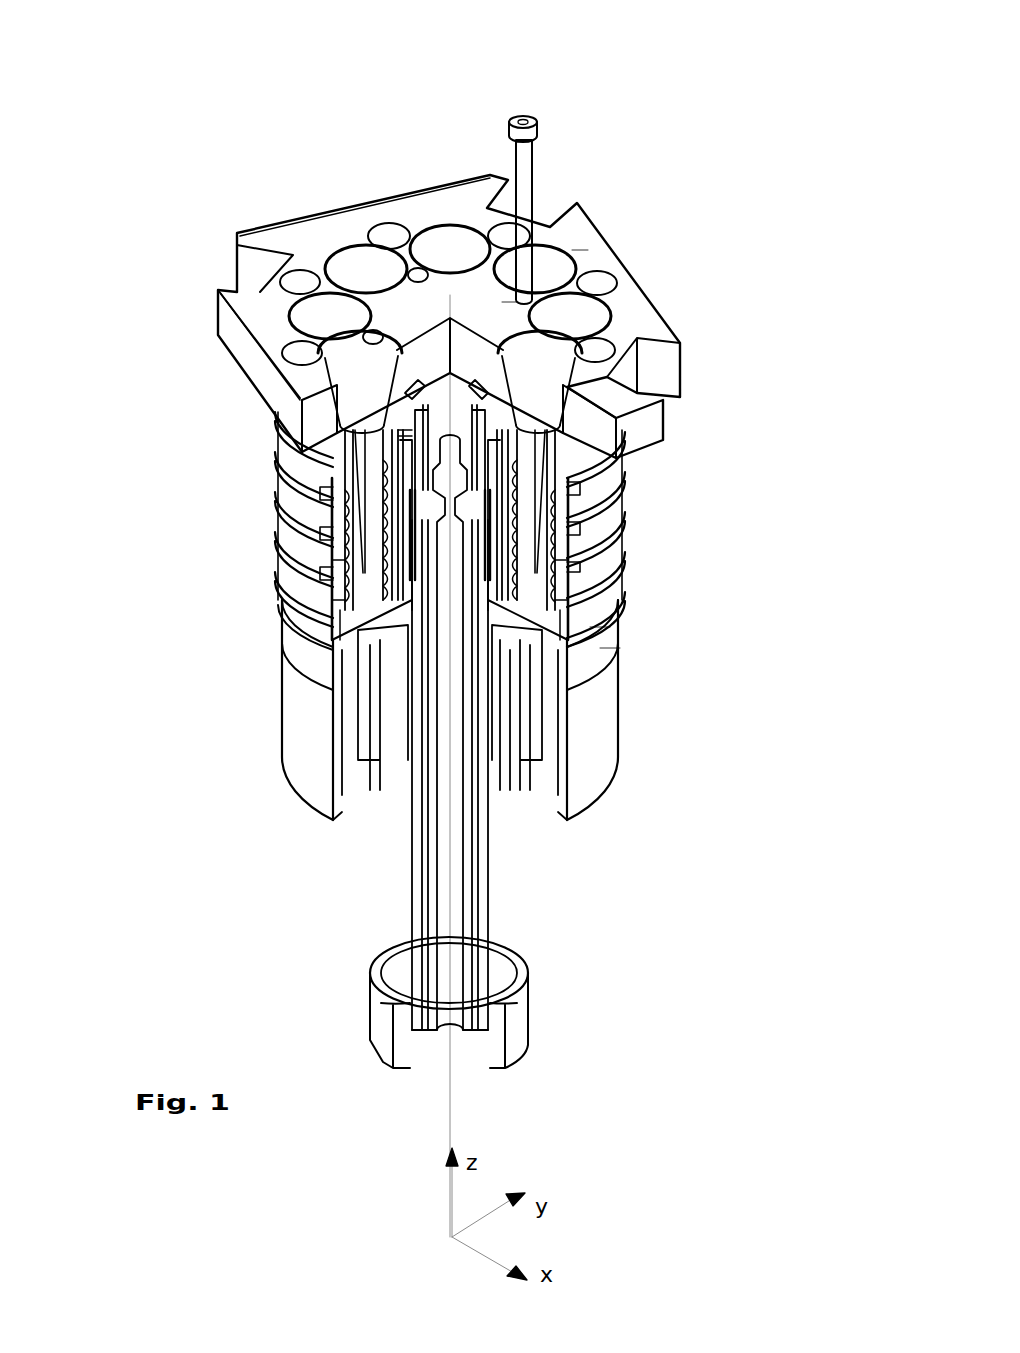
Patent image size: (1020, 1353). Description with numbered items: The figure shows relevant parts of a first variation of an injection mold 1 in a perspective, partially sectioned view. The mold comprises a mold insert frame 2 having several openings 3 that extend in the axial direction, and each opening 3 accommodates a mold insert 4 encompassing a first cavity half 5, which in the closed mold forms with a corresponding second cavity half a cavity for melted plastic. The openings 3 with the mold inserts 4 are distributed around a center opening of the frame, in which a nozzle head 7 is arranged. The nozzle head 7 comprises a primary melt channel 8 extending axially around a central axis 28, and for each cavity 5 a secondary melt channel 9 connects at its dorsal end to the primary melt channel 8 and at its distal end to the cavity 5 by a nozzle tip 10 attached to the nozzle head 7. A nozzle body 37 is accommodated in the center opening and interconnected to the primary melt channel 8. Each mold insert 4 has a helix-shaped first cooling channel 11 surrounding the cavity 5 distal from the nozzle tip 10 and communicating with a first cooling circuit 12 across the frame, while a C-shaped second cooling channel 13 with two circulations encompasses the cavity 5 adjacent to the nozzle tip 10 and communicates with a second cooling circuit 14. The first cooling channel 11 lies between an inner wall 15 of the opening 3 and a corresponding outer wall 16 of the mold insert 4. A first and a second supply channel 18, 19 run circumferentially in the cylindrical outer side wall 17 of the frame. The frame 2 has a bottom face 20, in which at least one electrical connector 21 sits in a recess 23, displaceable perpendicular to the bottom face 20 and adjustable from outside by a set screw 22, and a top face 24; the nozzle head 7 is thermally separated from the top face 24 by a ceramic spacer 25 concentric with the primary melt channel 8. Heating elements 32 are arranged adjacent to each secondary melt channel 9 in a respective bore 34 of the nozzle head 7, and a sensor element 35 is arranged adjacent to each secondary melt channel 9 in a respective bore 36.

The injection mold 1 is at (195, 68).
The mold insert frame 2 is at (420, 480).
The openings 3 is at (333, 253).
The mold insert 4 is at (400, 455).
The cavity half 5 is at (332, 452).
The nozzle head 7 is at (405, 430).
The primary melt channel 8 is at (428, 395).
The secondary melt channel 9 is at (510, 300).
The nozzle tip 10 is at (349, 428).
The first cooling channel 11 is at (622, 478).
The first cooling circuit 12 is at (662, 603).
The second cooling channel 13 is at (500, 430).
The second cooling circuit 14 is at (670, 554).
The inner wall 15 is at (350, 500).
The outer wall 16 is at (350, 520).
The outer side wall 17 is at (345, 542).
The first supply channel 18 is at (652, 505).
The second supply channel 19 is at (654, 629).
The bottom face 20 is at (305, 696).
The electrical connector 21 is at (358, 707).
The set screw 22 is at (523, 183).
The recess 23 is at (557, 797).
The top face 24 is at (540, 290).
The spacer 25 is at (580, 248).
The central axis 28 is at (450, 833).
The heating elements 32 is at (345, 483).
The bore 34 is at (600, 625).
The sensor element 35 is at (350, 560).
The bore 36 is at (610, 646).
The nozzle body 37 is at (575, 978).